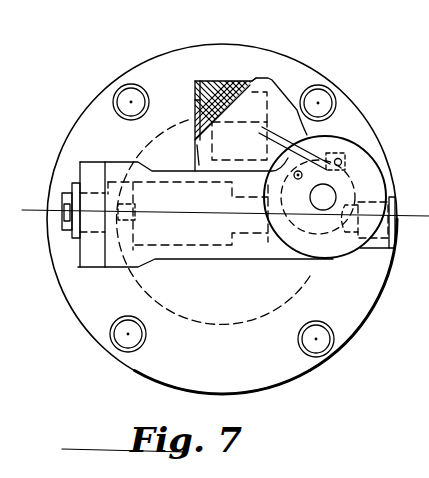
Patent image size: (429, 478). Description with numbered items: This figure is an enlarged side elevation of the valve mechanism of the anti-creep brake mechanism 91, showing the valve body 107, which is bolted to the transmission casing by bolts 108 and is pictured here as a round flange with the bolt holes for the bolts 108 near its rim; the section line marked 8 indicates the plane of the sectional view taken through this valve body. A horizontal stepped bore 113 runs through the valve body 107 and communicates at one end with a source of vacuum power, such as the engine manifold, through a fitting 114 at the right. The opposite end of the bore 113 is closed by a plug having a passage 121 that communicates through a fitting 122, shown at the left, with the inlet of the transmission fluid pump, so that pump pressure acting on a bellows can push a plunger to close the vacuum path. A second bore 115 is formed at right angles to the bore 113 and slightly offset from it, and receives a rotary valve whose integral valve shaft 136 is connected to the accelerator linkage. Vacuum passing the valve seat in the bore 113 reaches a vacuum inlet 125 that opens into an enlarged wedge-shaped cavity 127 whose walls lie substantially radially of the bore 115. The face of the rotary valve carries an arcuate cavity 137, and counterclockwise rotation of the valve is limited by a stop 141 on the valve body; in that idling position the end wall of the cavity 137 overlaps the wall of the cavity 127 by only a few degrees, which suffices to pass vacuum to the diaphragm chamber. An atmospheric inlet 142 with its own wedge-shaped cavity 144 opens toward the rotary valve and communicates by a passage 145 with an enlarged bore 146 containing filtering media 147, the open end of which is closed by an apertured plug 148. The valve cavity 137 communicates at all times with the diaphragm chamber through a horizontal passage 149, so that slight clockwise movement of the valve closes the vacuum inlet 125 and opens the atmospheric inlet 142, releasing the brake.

The anti-creep brake mechanism 91 is at (89, 80).
The valve body 107 is at (228, 60).
The bolts 108 is at (318, 103).
The horizontal stepped bore 113 is at (240, 240).
The fitting 114 is at (397, 218).
The second bore 115 is at (358, 163).
The passage 121 is at (421, 102).
The fitting 122 is at (62, 212).
The vacuum inlet 125 is at (306, 240).
The wedge-shaped cavity 127 is at (288, 243).
The valve shaft 136 is at (330, 203).
The arcuate cavity 137 is at (270, 185).
The stop 141 is at (338, 153).
The atmospheric inlet 142 is at (355, 148).
The wedge-shaped atmospheric cavity 144 is at (337, 193).
The passage 145 is at (283, 130).
The enlarged bore 146 is at (250, 80).
The filtering media 147 is at (213, 80).
The apertured plug 148 is at (201, 112).
The horizontal passage 149 is at (259, 153).
The section line 8- 8 is at (22, 210).